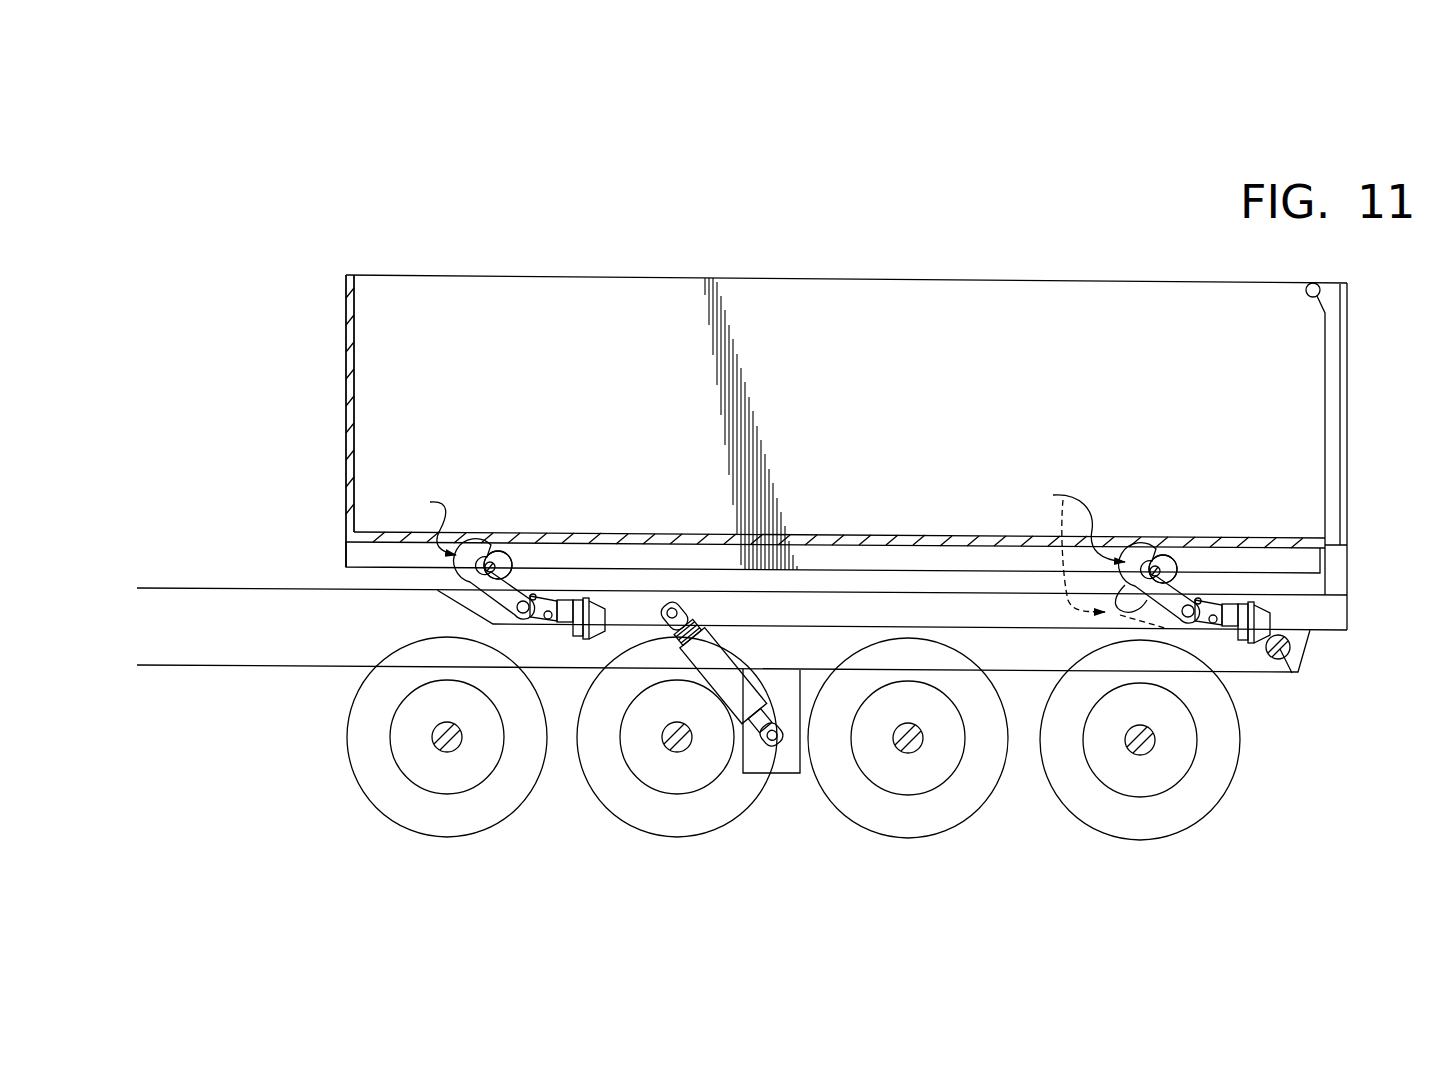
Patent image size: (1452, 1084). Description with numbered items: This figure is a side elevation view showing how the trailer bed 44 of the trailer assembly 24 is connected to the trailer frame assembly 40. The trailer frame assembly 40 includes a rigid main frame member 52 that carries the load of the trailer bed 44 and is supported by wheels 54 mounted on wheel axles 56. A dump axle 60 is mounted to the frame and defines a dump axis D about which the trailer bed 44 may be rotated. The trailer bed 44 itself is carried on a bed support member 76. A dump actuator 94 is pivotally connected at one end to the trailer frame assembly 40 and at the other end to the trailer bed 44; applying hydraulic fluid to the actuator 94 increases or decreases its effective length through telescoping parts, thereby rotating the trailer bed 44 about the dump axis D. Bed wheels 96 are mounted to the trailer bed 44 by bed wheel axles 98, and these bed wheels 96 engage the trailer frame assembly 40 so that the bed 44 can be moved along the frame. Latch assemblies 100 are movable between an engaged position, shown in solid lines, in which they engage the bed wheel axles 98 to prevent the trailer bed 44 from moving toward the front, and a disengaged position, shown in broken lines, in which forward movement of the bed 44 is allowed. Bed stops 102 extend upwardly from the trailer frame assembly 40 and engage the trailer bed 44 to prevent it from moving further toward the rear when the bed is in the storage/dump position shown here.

The trailer assembly 24 is at (953, 245).
The trailer bed 44 is at (343, 325).
The second bed support member 76 is at (925, 610).
The bed stops 102 is at (1338, 565).
The second main frame member 52 is at (280, 648).
The dump axle 60 is at (1297, 642).
The dump axis D is at (1292, 673).
The wheels 54 is at (632, 808).
The wheel axles 56 is at (1135, 748).
The trailer frame assembly 40 is at (787, 775).
The dump actuator 94 is at (741, 655).
The bed wheels 96 is at (511, 567).
The bed wheel axles 98 is at (500, 551).
The latch assemblies 100 is at (756, 551).